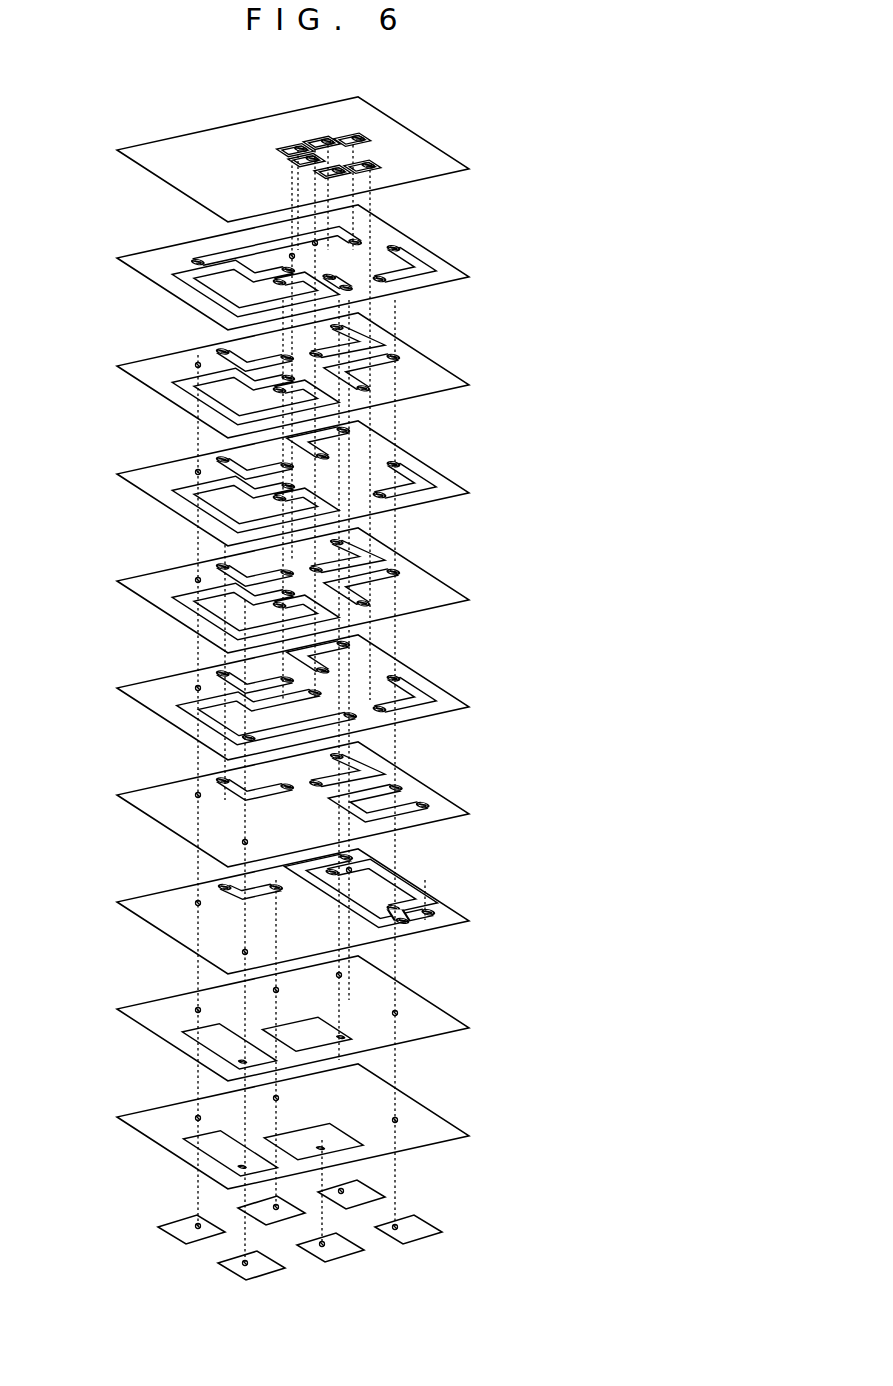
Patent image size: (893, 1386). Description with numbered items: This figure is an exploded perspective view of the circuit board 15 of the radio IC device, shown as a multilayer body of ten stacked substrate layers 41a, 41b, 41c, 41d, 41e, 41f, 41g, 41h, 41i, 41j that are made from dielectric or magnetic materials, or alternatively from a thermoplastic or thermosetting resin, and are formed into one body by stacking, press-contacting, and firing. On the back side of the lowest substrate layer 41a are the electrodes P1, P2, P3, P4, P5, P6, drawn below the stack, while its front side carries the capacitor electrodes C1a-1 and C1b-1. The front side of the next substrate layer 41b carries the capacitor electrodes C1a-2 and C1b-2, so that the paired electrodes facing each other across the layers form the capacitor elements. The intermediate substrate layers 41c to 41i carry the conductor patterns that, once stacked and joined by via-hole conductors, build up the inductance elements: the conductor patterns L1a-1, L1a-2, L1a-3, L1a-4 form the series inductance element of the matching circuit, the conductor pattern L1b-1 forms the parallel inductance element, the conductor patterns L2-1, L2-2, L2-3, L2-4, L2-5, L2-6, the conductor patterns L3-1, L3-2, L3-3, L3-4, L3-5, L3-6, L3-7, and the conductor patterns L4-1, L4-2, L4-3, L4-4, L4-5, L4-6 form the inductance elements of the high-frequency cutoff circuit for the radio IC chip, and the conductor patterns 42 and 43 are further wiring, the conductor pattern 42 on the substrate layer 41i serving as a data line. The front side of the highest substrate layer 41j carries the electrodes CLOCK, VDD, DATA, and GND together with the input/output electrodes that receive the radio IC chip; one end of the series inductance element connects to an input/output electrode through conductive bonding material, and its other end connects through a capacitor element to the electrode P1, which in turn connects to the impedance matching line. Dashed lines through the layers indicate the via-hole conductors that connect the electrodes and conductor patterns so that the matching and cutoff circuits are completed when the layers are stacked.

The circuit board 15 is at (550, 98).
The substrate layer 41a is at (447, 1121).
The substrate layer 41b is at (447, 1013).
The substrate layer 41c is at (447, 906).
The substrate layer 41d is at (447, 799).
The substrate layer 41e is at (447, 692).
The substrate layer 41f is at (447, 585).
The substrate layer 41g is at (447, 478).
The substrate layer 41h is at (447, 370).
The substrate layer 41i is at (447, 262).
The substrate layer 41j is at (447, 155).
The conductor pattern 42 is at (210, 246).
The conductor pattern 43 is at (348, 270).
The conductor pattern L1a-1 is at (192, 599).
The conductor pattern L1a-2 is at (192, 492).
The conductor pattern L1a-3 is at (192, 384).
The conductor pattern L1a-4 is at (192, 276).
The conductor pattern L1b-1 is at (192, 706).
The conductor pattern L2-1 is at (395, 914).
The conductor pattern L2-2 is at (367, 763).
The conductor pattern L2-3 is at (335, 658).
The conductor pattern L2-4 is at (367, 549).
The conductor pattern L2-5 is at (335, 443).
The conductor pattern L2-6 is at (367, 333).
The conductor pattern L3-1 is at (408, 886).
The conductor pattern L3-2 is at (395, 786).
The conductor pattern L3-3 is at (425, 684).
The conductor pattern L3-4 is at (393, 570).
The conductor pattern L3-5 is at (425, 469).
The conductor pattern L3-6 is at (393, 356).
The conductor pattern L3-7 is at (417, 253).
The conductor pattern L4-1 is at (217, 886).
The conductor pattern L4-2 is at (217, 784).
The conductor pattern L4-3 is at (217, 676).
The conductor pattern L4-4 is at (217, 569).
The conductor pattern L4-5 is at (217, 462).
The conductor pattern L4-6 is at (217, 354).
The capacitor electrode C1a-1 is at (225, 1168).
The capacitor electrode C1a-2 is at (225, 1060).
The capacitor electrode C1b-1 is at (322, 1136).
The capacitor electrode C1b-2 is at (320, 1030).
The electrode P1 is at (251, 1277).
The electrode P2 is at (330, 1259).
The electrode P3 is at (408, 1242).
The electrode P4 is at (355, 1184).
The electrode P5 is at (276, 1201).
The electrode P6 is at (195, 1220).
The electrode CLOCK is at (292, 142).
The electrode VDD is at (326, 134).
The electrode DATA is at (366, 137).
The electrode GND is at (370, 160).